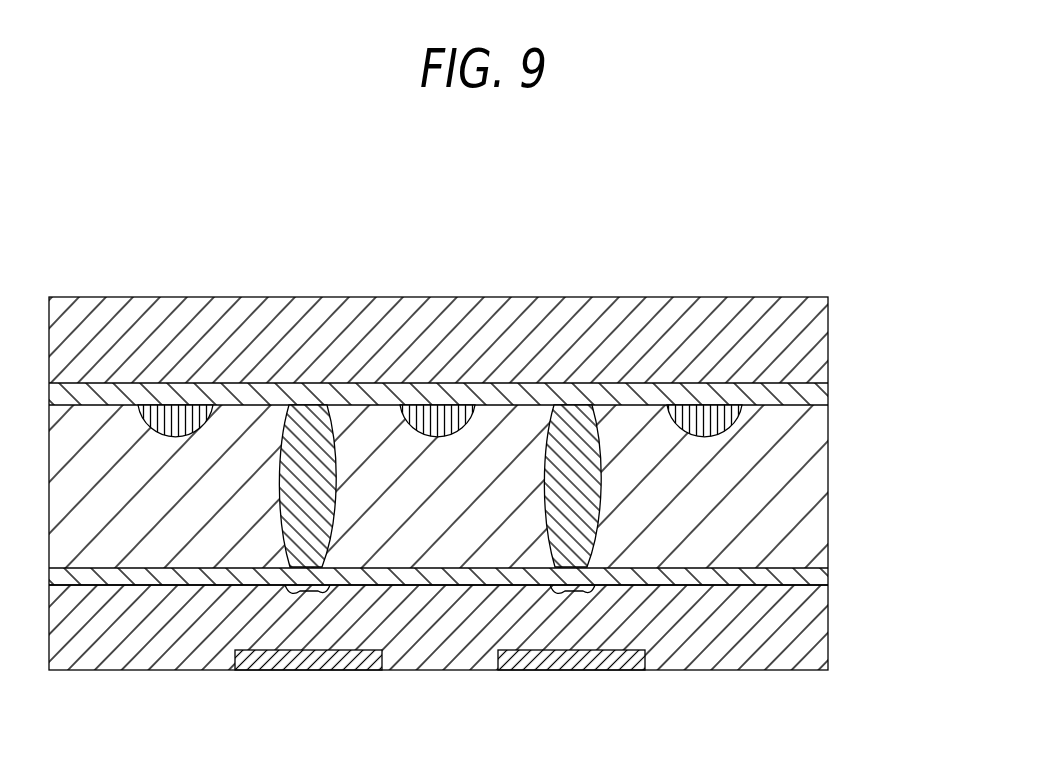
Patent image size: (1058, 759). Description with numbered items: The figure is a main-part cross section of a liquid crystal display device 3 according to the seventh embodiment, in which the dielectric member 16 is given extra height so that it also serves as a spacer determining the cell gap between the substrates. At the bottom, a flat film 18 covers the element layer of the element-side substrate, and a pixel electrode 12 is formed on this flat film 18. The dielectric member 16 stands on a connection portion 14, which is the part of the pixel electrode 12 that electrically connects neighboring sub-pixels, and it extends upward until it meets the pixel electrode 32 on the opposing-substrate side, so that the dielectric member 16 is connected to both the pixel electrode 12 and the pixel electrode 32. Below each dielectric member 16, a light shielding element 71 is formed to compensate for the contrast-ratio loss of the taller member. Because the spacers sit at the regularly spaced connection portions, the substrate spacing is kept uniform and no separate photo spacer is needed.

The liquid crystal display device 3 is at (755, 258).
The pixel electrode 12 is at (828, 573).
The connection portion 14 is at (308, 600).
The dielectric member 16 is at (336, 505).
The flat film 18 is at (828, 624).
The pixel electrode 32 is at (828, 393).
The light shielding element 71 is at (308, 672).